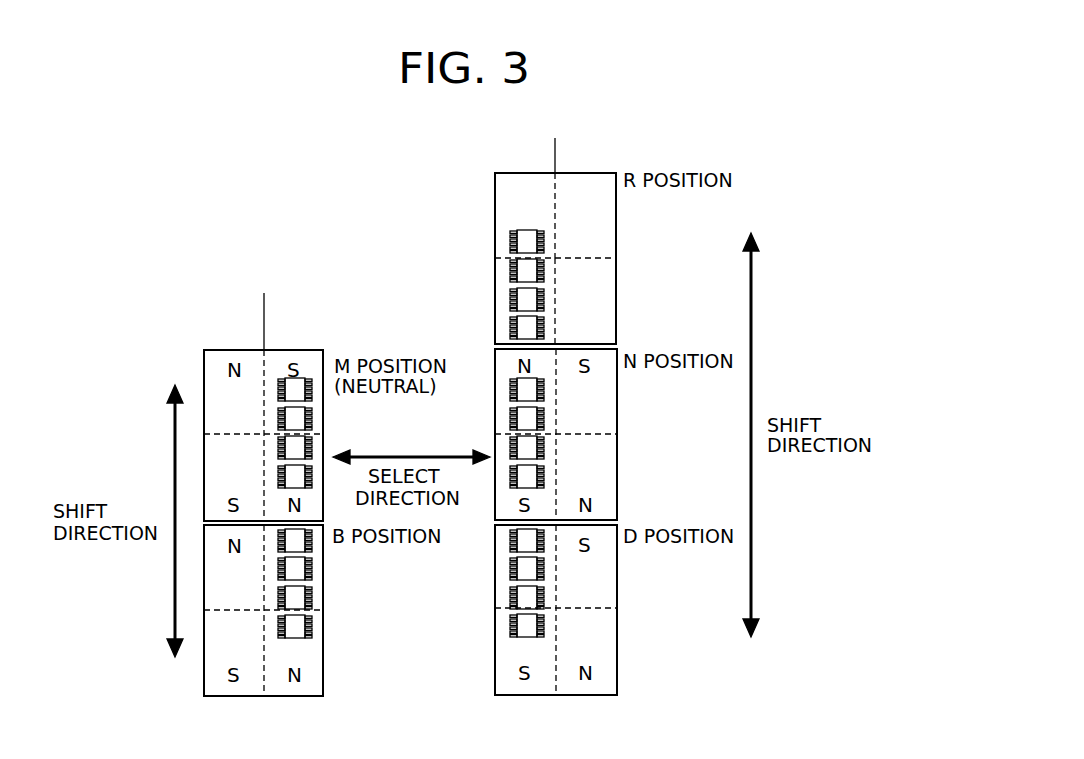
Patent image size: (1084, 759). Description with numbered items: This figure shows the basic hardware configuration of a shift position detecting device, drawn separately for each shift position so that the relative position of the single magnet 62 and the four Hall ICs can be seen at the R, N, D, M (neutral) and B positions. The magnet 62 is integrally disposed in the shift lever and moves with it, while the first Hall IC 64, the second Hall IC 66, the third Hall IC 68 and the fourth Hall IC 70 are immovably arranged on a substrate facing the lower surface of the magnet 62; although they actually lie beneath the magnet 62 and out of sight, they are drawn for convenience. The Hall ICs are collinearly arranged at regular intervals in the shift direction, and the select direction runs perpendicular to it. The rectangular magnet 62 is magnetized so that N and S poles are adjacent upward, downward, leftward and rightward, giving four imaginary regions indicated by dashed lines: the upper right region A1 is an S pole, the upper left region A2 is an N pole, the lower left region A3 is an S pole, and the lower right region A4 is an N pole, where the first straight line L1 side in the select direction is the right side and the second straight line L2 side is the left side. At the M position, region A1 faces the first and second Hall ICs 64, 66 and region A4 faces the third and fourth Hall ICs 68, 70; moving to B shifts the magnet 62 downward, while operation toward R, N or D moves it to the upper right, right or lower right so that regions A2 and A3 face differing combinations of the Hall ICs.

The magnet 62 is at (600, 158).
The Hall IC 64 is at (517, 241).
The Hall IC 66 is at (517, 270).
The Hall IC 68 is at (517, 298).
The Hall IC 70 is at (517, 326).
The region A1 is at (602, 227).
The region A2 is at (507, 180).
The region A3 is at (505, 336).
The region A4 is at (602, 302).
The first straight line L1 is at (555, 157).
The second straight line L2 is at (264, 333).